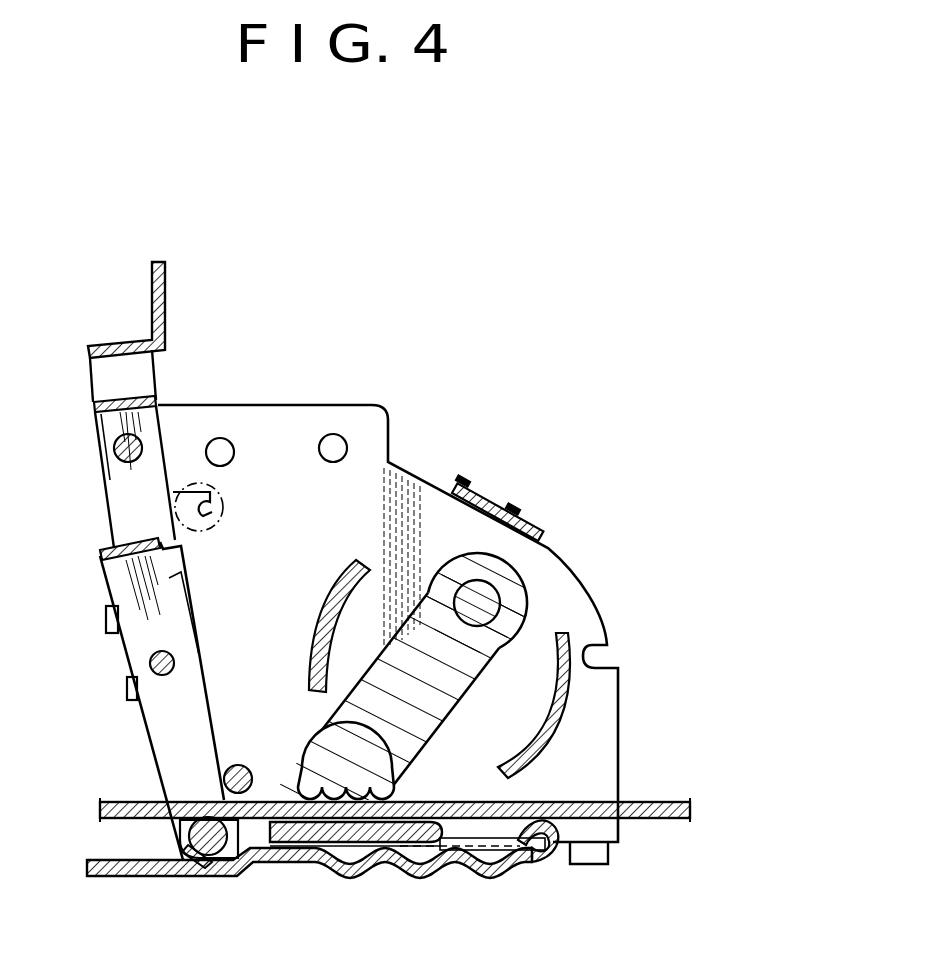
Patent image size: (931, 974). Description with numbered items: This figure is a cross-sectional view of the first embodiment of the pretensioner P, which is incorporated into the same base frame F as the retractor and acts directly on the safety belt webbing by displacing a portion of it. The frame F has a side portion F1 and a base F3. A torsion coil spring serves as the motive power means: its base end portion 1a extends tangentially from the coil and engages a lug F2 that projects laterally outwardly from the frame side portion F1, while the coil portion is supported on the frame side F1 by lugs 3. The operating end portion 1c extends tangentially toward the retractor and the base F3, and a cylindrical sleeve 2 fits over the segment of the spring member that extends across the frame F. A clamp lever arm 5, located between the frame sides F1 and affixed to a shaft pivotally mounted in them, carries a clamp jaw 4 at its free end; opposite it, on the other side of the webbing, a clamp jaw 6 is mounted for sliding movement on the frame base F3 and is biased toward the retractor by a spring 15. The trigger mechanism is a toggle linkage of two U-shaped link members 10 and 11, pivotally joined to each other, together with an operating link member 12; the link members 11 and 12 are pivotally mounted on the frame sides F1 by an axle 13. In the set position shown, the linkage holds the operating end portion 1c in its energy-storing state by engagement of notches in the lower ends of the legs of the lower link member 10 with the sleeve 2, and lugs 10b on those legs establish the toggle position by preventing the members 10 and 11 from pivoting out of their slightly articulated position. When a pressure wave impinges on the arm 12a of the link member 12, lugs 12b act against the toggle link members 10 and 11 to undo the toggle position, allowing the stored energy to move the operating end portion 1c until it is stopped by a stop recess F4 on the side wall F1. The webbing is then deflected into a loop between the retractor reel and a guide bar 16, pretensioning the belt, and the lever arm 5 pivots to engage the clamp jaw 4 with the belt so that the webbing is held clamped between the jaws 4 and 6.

The base end portion 1a is at (606, 852).
The operating end portion 1c is at (173, 832).
The cylindrical sleeve 2 is at (194, 878).
The lugs 3 is at (318, 625).
The clamp jaw 4 is at (300, 762).
The clamp lever arm 5 is at (437, 712).
The clamp jaw 6 is at (376, 858).
The lower link member 10 is at (165, 750).
The lugs 10b is at (185, 552).
The link member 11 is at (113, 515).
The operating link member 12 is at (95, 380).
The arm 12a is at (150, 290).
The lugs 12b is at (108, 622).
The axle 13 is at (148, 445).
The spring 15 is at (508, 872).
The guide bar 16 is at (237, 765).
The base frame F is at (560, 596).
The frame side portion F1 is at (338, 540).
The lug F2 is at (606, 695).
The base F3 is at (308, 862).
The stop recess F4 is at (193, 562).
The pretensioner P is at (431, 467).